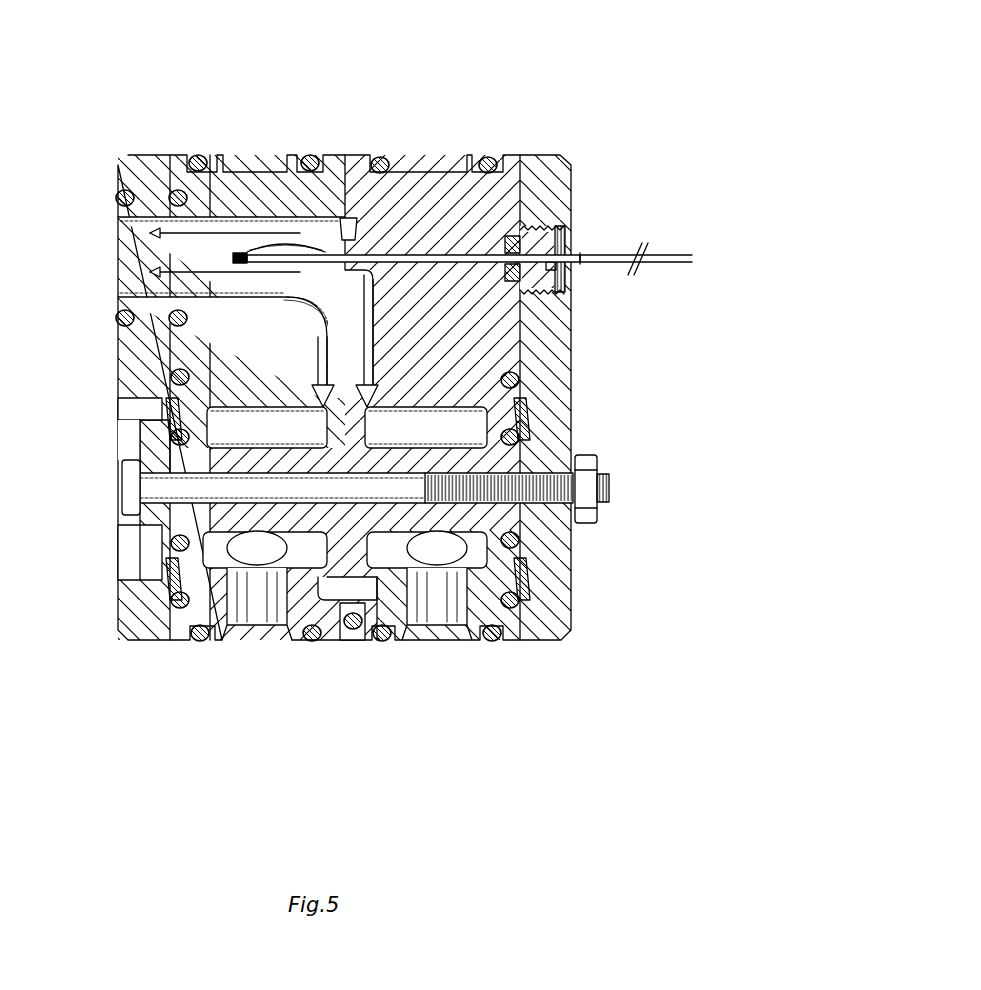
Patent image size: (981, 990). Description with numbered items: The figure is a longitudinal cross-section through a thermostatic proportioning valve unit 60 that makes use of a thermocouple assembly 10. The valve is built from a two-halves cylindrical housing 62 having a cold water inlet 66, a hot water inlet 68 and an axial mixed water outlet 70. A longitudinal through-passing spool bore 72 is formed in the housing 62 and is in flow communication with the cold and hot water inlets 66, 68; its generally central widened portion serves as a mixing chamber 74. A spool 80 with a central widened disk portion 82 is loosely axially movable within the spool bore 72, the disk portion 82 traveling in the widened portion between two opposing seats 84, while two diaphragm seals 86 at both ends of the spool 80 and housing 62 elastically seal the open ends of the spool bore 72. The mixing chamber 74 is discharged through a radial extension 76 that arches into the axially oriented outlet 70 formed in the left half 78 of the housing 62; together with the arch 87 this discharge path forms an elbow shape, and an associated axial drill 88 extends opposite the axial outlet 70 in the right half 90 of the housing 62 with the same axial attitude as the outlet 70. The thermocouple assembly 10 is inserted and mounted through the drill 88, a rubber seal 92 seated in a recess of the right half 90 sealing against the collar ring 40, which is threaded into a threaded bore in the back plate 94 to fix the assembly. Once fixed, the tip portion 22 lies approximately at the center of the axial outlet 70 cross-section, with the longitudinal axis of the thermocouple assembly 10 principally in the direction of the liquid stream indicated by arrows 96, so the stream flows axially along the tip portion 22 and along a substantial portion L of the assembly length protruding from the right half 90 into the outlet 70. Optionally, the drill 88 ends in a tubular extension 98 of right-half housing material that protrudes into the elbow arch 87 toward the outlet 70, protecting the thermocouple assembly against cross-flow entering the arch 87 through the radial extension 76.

The thermostatic proportioning valve unit 60 is at (302, 30).
The left half of housing 78 is at (210, 156).
The tip portion 22 is at (236, 253).
The substantial portion of thermocouple assembly length L is at (282, 242).
The tubular extension 98 is at (342, 232).
The cylindrical housing 62 is at (345, 156).
The axial drill 88 is at (420, 185).
The right half of housing 90 is at (483, 158).
The back plate 94 is at (548, 158).
The rubber seal 92 is at (520, 243).
The collar ring 40 is at (560, 260).
The thermocouple assembly 10 is at (580, 256).
The arrows 96 is at (140, 250).
The axial mixed water outlet 70 is at (215, 269).
The arch 87 is at (324, 289).
The radial extension 76 is at (360, 349).
The spool bore 72 is at (437, 436).
The spool 80 is at (150, 512).
The diaphragm seals 86 is at (168, 598).
The cold water inlet 66 is at (257, 642).
The mixing chamber 74 is at (340, 598).
The disk portion 82 is at (353, 630).
The seats 84 is at (396, 602).
The hot water inlet 68 is at (440, 642).